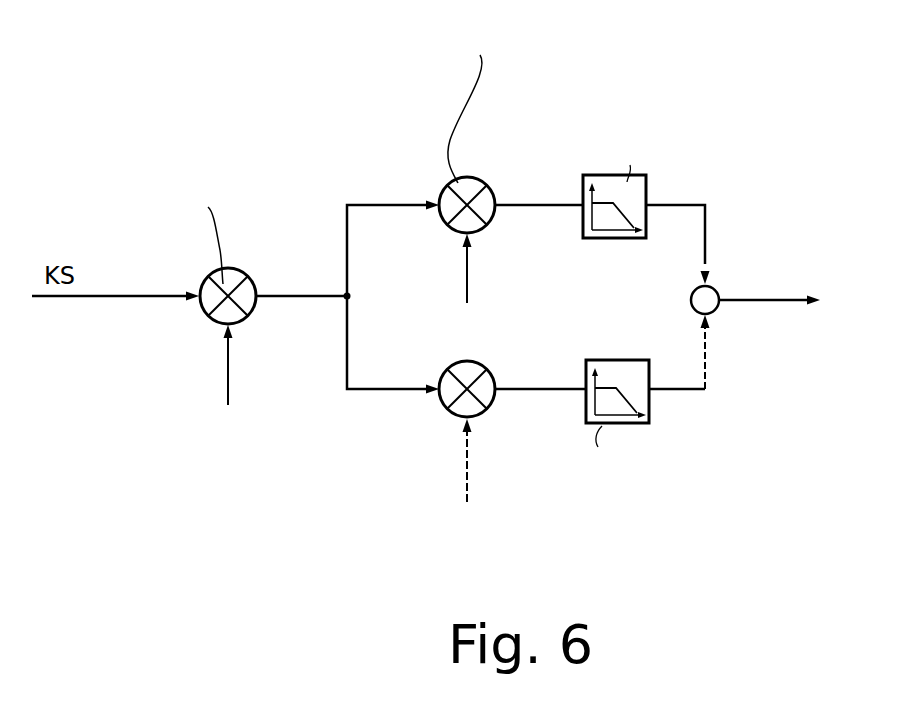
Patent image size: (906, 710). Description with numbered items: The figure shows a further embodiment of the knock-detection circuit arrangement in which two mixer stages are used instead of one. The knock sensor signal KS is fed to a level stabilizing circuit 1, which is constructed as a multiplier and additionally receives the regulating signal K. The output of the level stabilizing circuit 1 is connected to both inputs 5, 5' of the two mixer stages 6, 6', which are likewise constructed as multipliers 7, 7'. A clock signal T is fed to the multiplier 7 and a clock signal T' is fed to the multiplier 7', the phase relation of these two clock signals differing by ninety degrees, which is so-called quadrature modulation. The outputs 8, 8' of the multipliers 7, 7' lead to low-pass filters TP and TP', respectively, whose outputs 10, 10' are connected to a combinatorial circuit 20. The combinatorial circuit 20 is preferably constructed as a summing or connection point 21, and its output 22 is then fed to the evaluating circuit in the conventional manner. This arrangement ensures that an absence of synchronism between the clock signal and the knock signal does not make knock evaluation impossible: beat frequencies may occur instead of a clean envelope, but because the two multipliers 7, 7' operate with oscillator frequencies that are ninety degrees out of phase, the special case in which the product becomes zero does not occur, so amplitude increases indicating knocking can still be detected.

The level stabilizing circuit 1 is at (236, 244).
The input 5 is at (393, 189).
The input 5' is at (393, 386).
The mixer stage 6 is at (503, 162).
The mixer stage 6' is at (513, 357).
The multiplier 7 is at (459, 161).
The multiplier 7' is at (449, 450).
The output 8 is at (539, 241).
The output 8' is at (541, 446).
The output 10 is at (677, 195).
The output 10' is at (660, 426).
The combinatorial circuit 20 is at (727, 330).
The summing or connection point 21 is at (713, 286).
The output 22 is at (790, 298).